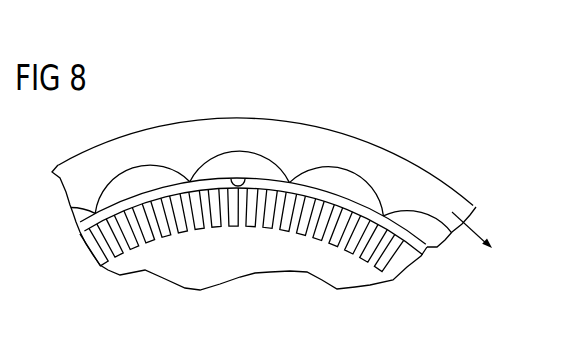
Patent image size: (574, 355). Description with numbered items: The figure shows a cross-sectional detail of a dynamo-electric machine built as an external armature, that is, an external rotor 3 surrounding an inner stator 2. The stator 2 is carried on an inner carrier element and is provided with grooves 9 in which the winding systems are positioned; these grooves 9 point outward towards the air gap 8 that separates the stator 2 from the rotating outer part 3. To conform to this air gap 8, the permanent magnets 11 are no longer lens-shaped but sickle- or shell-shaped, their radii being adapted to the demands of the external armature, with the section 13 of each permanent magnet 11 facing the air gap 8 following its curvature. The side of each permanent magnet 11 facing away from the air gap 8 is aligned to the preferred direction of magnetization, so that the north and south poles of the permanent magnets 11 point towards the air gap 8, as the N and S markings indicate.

The stator 2 is at (307, 270).
The rotor 3 is at (405, 180).
The air gap 8 is at (428, 250).
The grooves 9 is at (180, 233).
The permanent magnet 11 is at (266, 165).
The section of the permanent magnet 13 is at (245, 177).